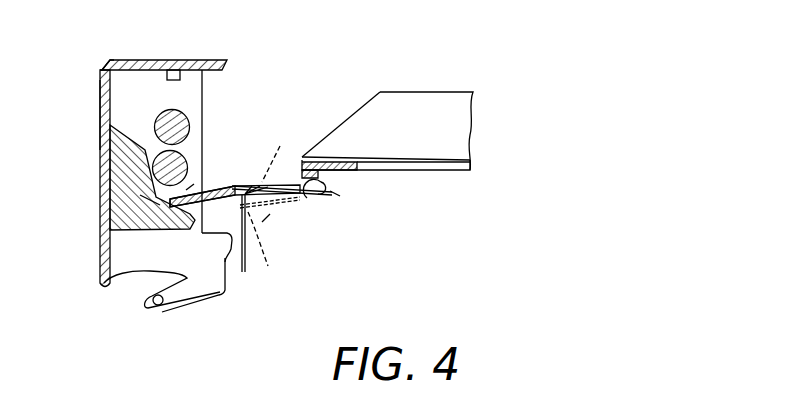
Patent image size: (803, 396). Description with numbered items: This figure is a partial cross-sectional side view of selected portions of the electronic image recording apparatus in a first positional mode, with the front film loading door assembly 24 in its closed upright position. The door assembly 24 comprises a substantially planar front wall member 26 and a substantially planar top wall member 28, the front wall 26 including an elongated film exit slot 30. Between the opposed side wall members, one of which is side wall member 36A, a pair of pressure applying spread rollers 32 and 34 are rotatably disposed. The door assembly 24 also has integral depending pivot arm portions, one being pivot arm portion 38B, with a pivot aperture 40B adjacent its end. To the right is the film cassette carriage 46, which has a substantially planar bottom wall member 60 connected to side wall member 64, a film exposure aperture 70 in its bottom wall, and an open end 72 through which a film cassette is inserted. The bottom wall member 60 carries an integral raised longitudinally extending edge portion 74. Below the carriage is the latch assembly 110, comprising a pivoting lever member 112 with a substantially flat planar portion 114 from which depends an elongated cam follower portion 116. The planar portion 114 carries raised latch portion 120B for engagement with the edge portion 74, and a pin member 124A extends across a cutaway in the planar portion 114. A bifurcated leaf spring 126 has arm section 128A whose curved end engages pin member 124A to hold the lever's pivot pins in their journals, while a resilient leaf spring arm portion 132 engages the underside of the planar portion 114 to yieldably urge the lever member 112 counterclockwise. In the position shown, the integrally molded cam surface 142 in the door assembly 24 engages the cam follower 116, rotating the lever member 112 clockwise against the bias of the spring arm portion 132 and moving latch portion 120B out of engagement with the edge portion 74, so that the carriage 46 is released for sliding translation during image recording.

The front film loading door assembly 24 is at (104, 50).
The top wall member 28 is at (137, 61).
The film exit slot 30 is at (102, 115).
The front wall member 26 is at (100, 175).
The pressure applying spread roller 32 is at (162, 112).
The pressure applying spread roller 34 is at (207, 113).
The side wall member 36A is at (200, 183).
The planar portion 114 is at (290, 186).
The arm section 128A is at (257, 165).
The cam follower portion 116 is at (221, 188).
The cam surface 142 is at (110, 216).
The leaf spring 126 is at (230, 225).
The pin member 124A is at (282, 239).
The latch assembly 110 is at (264, 224).
The resilient leaf spring arm portion 132 is at (278, 208).
The raised longitudinally extending edge portion 74 is at (310, 200).
The lever member 112 is at (341, 195).
The raised latch portion 120B is at (320, 177).
The film exposure aperture 70 is at (367, 138).
The open end 72 is at (348, 112).
The film cassette carriage 46 is at (421, 84).
The side wall member 64 is at (426, 139).
The bottom wall member 60 is at (453, 173).
The pivot aperture 40B is at (149, 302).
The pivot arm portion 38B is at (187, 306).